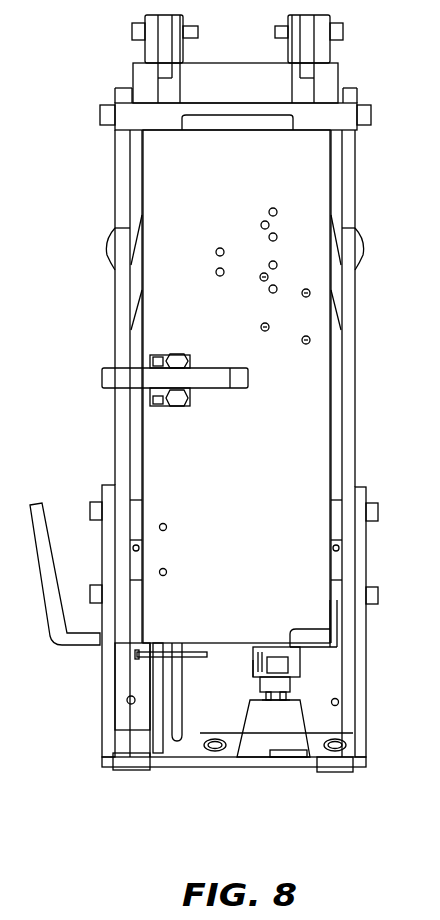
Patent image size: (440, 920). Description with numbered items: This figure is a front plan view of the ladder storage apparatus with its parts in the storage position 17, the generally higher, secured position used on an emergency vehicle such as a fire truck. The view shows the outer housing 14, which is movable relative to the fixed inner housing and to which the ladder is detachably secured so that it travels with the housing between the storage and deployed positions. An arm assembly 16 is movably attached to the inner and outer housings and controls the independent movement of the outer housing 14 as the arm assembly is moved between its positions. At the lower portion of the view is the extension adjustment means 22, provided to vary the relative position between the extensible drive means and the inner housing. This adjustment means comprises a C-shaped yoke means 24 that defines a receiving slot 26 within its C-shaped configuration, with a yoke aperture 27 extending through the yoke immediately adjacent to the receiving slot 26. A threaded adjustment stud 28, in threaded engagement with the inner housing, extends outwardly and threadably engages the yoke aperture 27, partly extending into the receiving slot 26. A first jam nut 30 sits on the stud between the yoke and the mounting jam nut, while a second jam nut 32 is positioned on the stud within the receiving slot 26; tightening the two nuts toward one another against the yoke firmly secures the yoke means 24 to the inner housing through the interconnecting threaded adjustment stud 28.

The outer housing 14 is at (248, 185).
The arm assembly 16 is at (120, 330).
The storage position 17 is at (120, 172).
The extension adjustment means 22 is at (293, 663).
The C-shaped yoke means 24 is at (293, 680).
The receiving slot 26 is at (253, 660).
The yoke aperture 27 is at (280, 682).
The threaded adjustment stud 28 is at (268, 680).
The first jam nut 30 is at (285, 682).
The second jam nut 32 is at (330, 629).